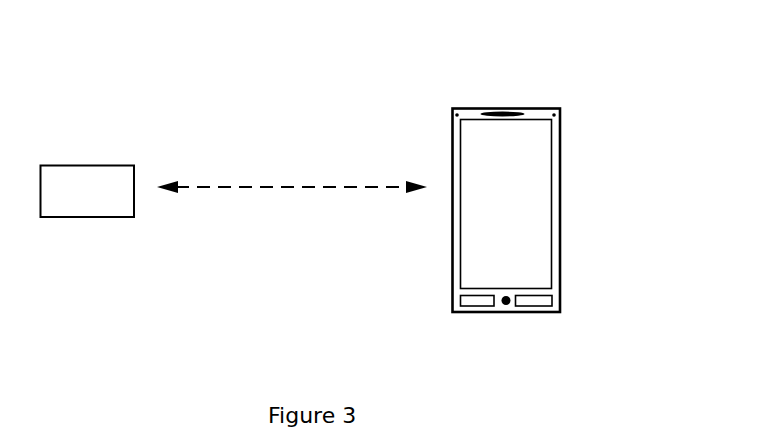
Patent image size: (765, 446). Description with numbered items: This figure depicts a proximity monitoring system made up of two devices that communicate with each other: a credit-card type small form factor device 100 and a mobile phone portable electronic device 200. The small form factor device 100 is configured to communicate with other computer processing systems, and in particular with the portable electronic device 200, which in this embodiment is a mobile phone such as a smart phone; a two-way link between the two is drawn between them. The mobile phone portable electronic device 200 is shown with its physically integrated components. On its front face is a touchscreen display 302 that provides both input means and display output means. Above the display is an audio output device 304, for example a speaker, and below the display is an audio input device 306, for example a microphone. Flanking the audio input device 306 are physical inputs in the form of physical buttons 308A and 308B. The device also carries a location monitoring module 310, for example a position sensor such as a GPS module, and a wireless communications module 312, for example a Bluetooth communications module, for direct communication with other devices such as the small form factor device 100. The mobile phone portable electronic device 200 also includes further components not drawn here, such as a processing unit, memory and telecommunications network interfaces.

The small form factor device 100 is at (105, 200).
The portable electronic device 200 is at (454, 92).
The touchscreen display 302 is at (523, 216).
The audio output device 304 is at (510, 111).
The audio input device 306 is at (508, 308).
The physical button 308A is at (471, 313).
The physical button 308B is at (540, 313).
The location monitoring module 310 is at (562, 116).
The wireless communications module 312 is at (451, 115).